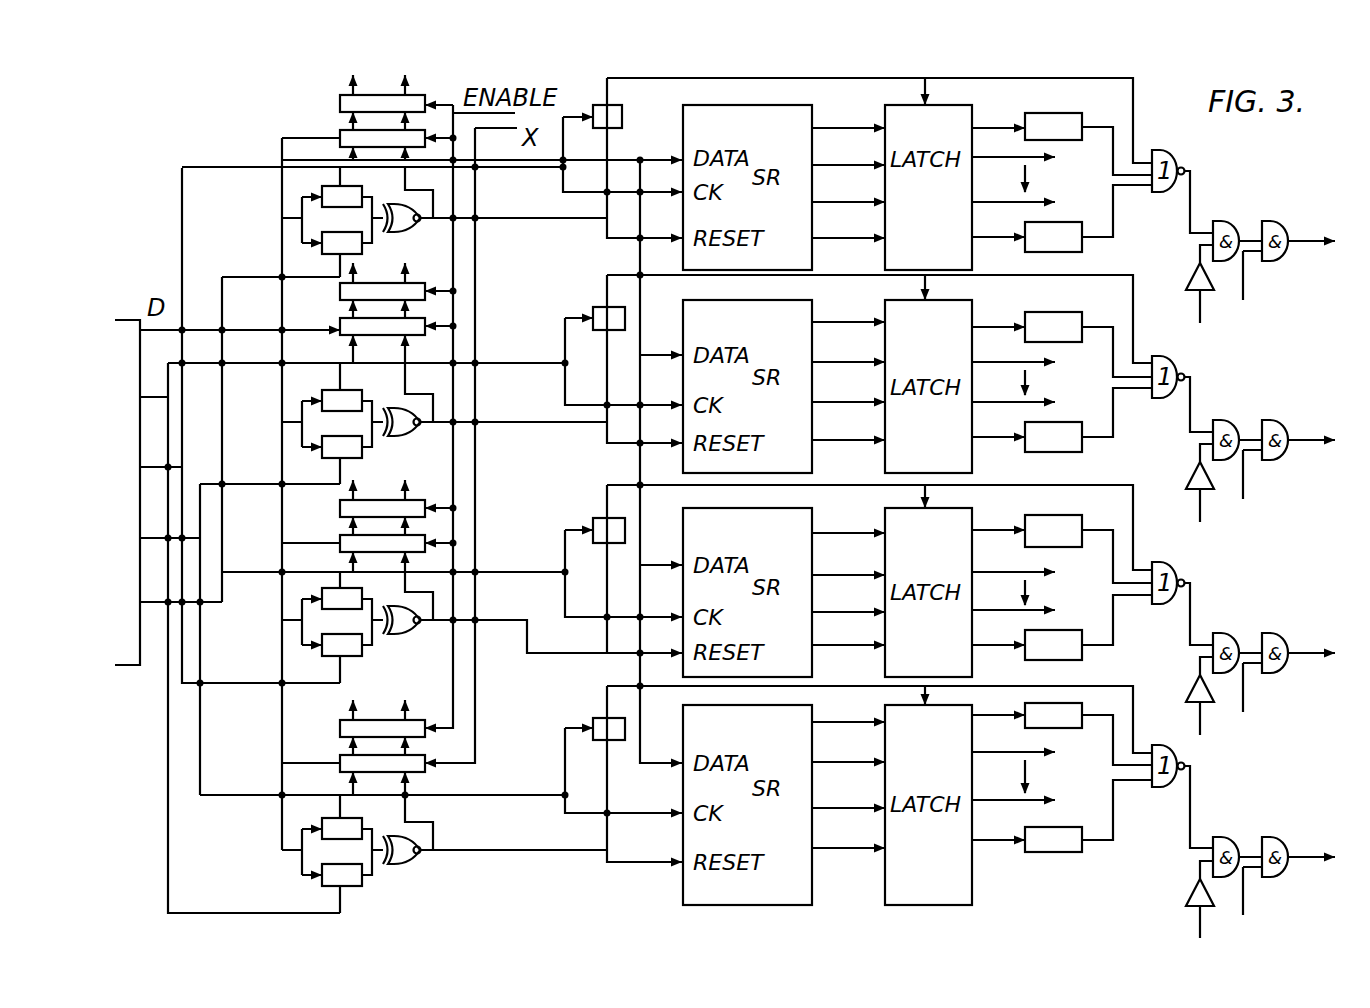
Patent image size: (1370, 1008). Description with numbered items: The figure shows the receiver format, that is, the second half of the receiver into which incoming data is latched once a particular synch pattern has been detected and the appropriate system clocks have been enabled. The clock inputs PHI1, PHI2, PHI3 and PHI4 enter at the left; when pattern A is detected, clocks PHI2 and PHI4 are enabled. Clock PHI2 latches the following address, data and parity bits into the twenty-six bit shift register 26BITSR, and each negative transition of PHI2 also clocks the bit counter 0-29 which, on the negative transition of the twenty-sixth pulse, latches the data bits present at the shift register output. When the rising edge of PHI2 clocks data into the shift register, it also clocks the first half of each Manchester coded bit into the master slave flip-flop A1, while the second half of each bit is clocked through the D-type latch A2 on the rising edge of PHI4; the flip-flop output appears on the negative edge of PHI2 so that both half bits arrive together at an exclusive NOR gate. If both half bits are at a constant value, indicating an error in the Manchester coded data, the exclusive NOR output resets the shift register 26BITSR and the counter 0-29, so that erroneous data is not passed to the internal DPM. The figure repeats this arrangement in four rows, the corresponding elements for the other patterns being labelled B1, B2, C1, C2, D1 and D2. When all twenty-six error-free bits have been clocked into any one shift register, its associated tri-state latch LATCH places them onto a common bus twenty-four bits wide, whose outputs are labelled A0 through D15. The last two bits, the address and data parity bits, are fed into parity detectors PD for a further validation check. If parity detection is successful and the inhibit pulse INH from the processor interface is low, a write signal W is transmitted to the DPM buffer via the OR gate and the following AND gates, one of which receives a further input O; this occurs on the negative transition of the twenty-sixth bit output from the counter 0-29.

The master slave flip-flop A1 is at (333, 195).
The D-type latch A2 is at (333, 240).
The latch B1 is at (333, 397).
The latch B2 is at (333, 438).
The latch C1 is at (333, 598).
The latch C2 is at (333, 640).
The latch D1 is at (333, 822).
The latch D2 is at (333, 866).
The parity detector PD is at (1058, 123).
The address output A0 is at (1072, 457).
The data output D15 is at (1080, 503).
The write signal W is at (1325, 573).
The inhibit pulse INH is at (1224, 624).
The output enable input O is at (1259, 606).
The tri-state latch LATCH is at (347, 101).
The twenty-six bit shift register 26BITSR is at (350, 139).
The bit counter 0-29 is at (624, 117).
The clock phase 1 PHI1 is at (120, 392).
The clock phi-two PHI2 is at (120, 462).
The clock phase 3 PHI3 is at (120, 534).
The clock phi-four PHI4 is at (120, 599).